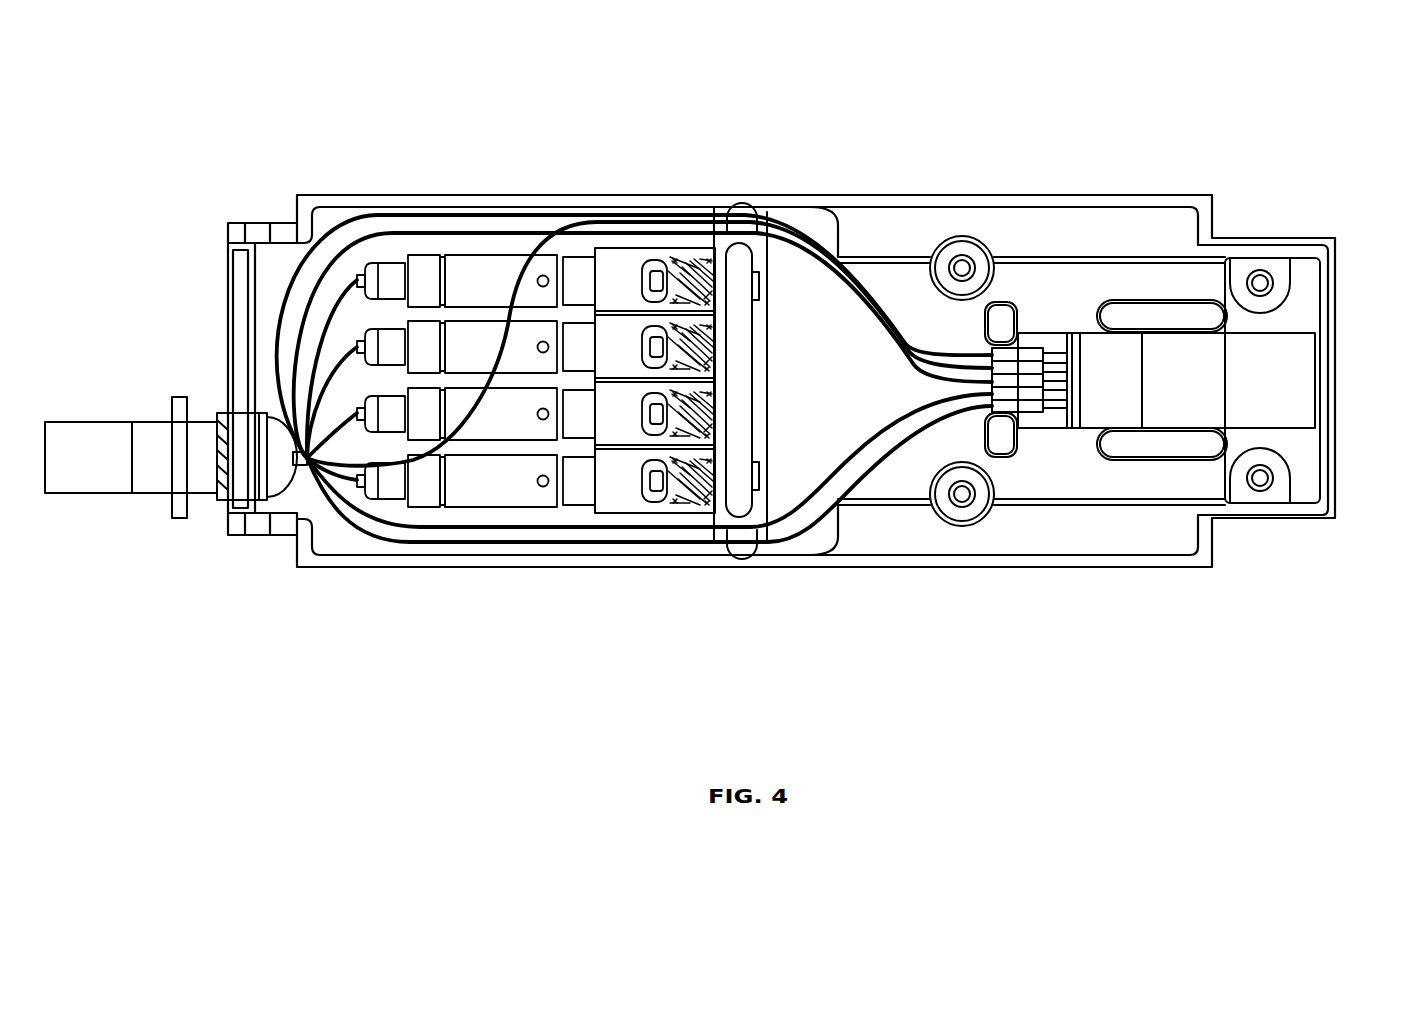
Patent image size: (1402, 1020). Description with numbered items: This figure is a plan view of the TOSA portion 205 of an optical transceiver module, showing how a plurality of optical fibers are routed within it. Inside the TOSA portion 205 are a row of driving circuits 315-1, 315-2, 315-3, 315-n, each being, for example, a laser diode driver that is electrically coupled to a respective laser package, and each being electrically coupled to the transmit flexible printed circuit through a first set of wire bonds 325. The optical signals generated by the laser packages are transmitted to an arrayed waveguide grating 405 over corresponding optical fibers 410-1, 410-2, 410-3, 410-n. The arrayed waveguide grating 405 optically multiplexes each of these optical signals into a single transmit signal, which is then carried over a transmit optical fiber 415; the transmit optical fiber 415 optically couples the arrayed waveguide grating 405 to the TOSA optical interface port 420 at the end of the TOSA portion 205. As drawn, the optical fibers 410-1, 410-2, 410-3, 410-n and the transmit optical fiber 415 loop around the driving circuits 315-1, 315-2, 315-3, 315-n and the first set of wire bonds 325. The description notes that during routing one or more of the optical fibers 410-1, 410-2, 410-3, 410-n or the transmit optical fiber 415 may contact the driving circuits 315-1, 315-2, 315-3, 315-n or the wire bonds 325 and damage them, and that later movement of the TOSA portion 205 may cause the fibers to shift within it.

The TOSA portion 205 is at (347, 124).
The driving circuit 315-1 is at (723, 288).
The driving circuit 315-2 is at (723, 335).
The driving circuit 315-3 is at (735, 402).
The driving circuit 315-n is at (727, 458).
The first set of wire bonds 325 is at (710, 510).
The arrayed waveguide grating 405 is at (1273, 390).
The optical fiber 410-1 is at (862, 478).
The optical fiber 410-2 is at (792, 535).
The optical fiber 410-3 is at (903, 350).
The optical fiber 410-n is at (947, 350).
The transmit optical fiber 415 is at (652, 223).
The TOSA optical interface port 420 is at (82, 428).